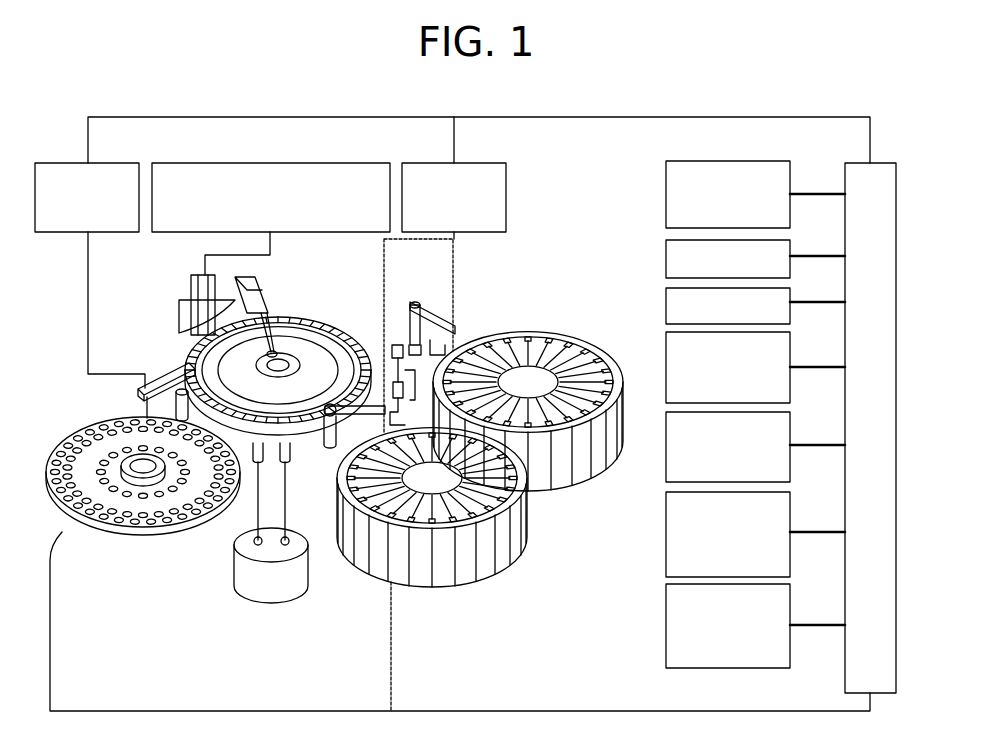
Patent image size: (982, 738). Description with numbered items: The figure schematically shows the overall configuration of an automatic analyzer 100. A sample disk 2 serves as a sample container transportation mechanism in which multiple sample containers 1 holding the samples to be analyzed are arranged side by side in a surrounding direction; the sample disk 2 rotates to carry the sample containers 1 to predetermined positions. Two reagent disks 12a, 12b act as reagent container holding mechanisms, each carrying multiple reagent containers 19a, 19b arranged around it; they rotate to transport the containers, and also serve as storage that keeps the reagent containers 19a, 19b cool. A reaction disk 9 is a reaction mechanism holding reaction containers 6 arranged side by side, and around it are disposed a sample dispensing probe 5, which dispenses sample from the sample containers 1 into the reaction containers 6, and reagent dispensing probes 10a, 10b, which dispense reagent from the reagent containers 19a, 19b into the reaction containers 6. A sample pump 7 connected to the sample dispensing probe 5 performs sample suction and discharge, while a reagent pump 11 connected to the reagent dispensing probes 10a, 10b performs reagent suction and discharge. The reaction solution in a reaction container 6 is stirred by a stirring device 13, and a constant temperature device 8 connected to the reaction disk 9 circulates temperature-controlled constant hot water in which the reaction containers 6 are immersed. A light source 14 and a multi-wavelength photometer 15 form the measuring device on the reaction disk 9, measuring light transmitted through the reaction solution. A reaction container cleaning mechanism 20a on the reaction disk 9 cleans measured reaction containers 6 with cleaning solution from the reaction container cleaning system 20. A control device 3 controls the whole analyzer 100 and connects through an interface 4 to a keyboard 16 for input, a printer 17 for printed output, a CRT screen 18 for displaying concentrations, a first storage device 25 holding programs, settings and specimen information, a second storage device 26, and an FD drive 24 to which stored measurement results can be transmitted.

The automatic analyzer 100 is at (266, 98).
The sample pump 7 is at (47, 163).
The reaction container cleaning system 20 is at (282, 163).
The reagent pump 11 is at (483, 163).
The interface 4 is at (880, 163).
The control device 3 is at (666, 190).
The keyboard 16 is at (666, 256).
The printer 17 is at (666, 302).
The CRT screen 18 is at (666, 362).
The FD drive 24 is at (666, 447).
The first storage device 25 is at (666, 556).
The second storage device 26 is at (666, 626).
The reaction container cleaning mechanism 20a is at (185, 300).
The multi-wavelength photometer 15 is at (262, 305).
The light source 14 is at (278, 350).
The reaction disk 9 is at (305, 320).
The reaction container 6 is at (340, 330).
The sample dispensing probe 5 is at (160, 370).
The sample container 1 is at (77, 432).
The sample disk 2 is at (180, 533).
The constant temperature device 8 is at (272, 596).
The reagent dispensing probe 10b is at (330, 450).
The reagent dispensing probe 10a is at (432, 305).
The stirring device 13 is at (392, 340).
The reagent disk 12a is at (504, 330).
The reagent container 19a is at (538, 330).
The reagent disk 12b is at (467, 585).
The reagent container 19b is at (510, 500).